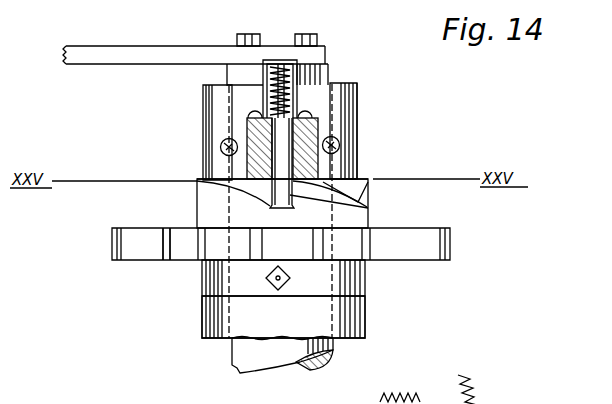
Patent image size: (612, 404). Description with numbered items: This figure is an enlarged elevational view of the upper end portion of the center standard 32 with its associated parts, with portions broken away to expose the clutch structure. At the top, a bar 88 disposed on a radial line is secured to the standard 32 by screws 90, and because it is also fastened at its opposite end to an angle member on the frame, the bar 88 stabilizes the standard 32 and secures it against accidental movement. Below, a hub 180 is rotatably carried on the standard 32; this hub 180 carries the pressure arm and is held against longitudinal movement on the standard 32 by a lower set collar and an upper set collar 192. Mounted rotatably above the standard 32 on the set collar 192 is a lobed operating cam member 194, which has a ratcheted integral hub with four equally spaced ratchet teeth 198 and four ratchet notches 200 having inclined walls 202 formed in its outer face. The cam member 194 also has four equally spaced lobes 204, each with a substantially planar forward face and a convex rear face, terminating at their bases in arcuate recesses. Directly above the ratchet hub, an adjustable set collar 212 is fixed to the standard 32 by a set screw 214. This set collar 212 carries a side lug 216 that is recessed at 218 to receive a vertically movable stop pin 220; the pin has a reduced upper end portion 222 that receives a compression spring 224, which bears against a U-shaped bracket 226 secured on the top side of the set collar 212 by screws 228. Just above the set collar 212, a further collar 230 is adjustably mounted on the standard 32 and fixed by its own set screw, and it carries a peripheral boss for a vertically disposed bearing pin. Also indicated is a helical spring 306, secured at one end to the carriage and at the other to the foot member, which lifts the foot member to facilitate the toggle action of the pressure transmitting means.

The standard 32 is at (240, 369).
The bar 88 is at (73, 67).
The screws 90 is at (237, 37).
The hub 180 is at (206, 325).
The upper set collar 192 is at (206, 285).
The lobed operating cam member 194 is at (160, 246).
The ratchet teeth 198 is at (197, 180).
The ratchet notches 200 is at (368, 194).
The inclined walls 202 is at (363, 182).
The lobes 204 is at (112, 243).
The adjustable set collar 212 is at (359, 146).
The set screw 214 is at (221, 149).
The side lug 216 is at (247, 129).
The recess 218 is at (249, 190).
The stop pin 220 is at (345, 205).
The reduced upper end portion 222 is at (286, 57).
The compression spring 224 is at (263, 97).
The U-shaped bracket 226 is at (297, 92).
The screws 228 is at (340, 99).
The collar 230 is at (203, 90).
The helical spring 306 is at (478, 381).